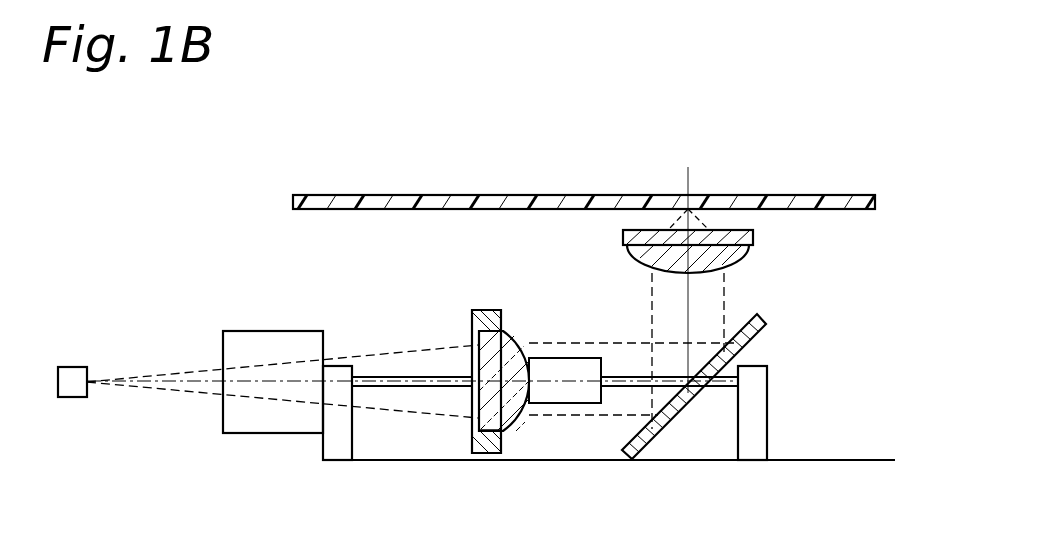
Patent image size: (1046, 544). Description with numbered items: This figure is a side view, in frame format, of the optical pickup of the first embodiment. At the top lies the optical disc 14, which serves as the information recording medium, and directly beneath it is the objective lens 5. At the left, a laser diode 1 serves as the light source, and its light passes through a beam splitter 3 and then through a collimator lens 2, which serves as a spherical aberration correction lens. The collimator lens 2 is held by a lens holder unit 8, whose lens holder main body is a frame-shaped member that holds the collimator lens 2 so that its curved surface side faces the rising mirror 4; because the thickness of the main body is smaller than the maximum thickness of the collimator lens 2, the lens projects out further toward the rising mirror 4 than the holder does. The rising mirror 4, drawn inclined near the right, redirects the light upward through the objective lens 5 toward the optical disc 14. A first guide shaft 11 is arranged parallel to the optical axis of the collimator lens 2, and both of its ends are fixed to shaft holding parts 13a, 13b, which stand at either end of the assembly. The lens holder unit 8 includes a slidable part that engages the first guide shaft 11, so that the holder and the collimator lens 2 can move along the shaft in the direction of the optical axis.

The laser diode 1 is at (74, 367).
The collimator lens 2 is at (512, 330).
The beam splitter 3 is at (244, 427).
The rising mirror 4 is at (760, 327).
The objective lens 5 is at (747, 237).
The lens holder unit 8 is at (483, 447).
The first guide shaft 11 is at (395, 377).
The shaft holding part 13a is at (760, 408).
The shaft holding part 13b is at (337, 453).
The optical disc 14 is at (848, 204).